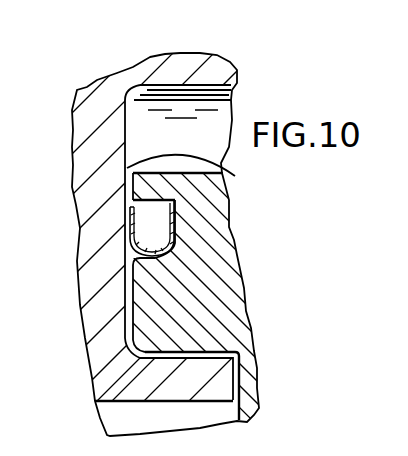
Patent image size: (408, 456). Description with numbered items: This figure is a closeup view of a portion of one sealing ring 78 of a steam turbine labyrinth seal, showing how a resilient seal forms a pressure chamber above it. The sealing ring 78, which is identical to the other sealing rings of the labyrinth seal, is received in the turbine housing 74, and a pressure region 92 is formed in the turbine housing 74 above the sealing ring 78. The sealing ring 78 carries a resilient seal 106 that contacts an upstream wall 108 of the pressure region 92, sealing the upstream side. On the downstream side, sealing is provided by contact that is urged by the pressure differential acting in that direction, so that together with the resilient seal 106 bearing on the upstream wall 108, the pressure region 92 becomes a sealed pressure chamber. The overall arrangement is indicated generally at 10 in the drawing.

The assembly 10 is at (0, 110).
The turbine housing 74 is at (93, 123).
The sealing ring 78 is at (246, 310).
The pressure region 92 is at (180, 85).
The resilient seal 106 is at (126, 234).
The upstream wall 108 is at (235, 176).